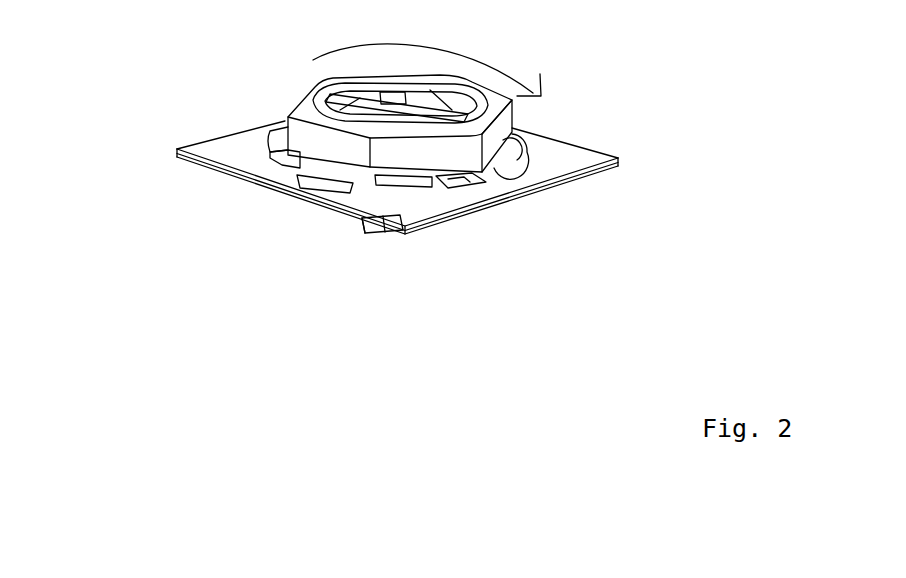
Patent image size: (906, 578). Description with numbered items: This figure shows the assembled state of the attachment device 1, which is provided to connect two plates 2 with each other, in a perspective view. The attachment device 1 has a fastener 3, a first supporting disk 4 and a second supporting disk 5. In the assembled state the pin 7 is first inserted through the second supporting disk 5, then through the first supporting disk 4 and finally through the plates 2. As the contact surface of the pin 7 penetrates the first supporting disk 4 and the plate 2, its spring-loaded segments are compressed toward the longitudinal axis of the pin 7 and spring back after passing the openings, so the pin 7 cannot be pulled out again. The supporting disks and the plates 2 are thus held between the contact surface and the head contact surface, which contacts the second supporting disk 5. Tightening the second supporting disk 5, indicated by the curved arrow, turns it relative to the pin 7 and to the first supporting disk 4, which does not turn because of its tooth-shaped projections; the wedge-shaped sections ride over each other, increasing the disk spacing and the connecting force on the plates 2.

The attachment device 1 is at (596, 55).
The plates 2 is at (163, 154).
The fastener 3 is at (306, 80).
The first supporting disk 4 is at (481, 195).
The second supporting disk 5 is at (370, 169).
The pin 7 is at (381, 248).